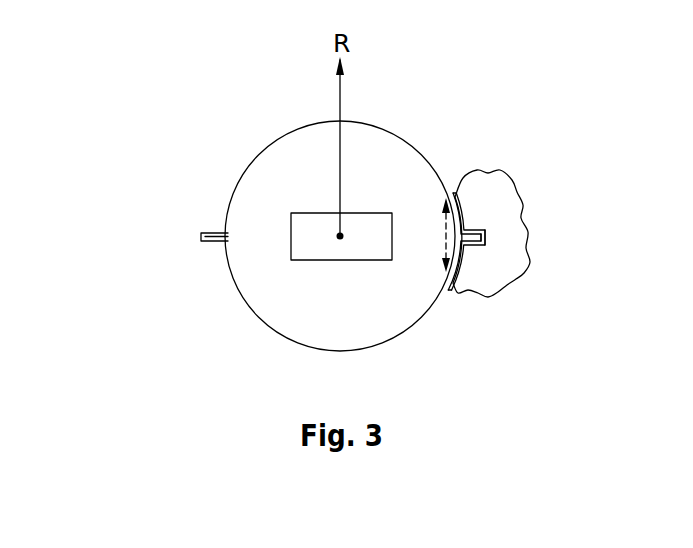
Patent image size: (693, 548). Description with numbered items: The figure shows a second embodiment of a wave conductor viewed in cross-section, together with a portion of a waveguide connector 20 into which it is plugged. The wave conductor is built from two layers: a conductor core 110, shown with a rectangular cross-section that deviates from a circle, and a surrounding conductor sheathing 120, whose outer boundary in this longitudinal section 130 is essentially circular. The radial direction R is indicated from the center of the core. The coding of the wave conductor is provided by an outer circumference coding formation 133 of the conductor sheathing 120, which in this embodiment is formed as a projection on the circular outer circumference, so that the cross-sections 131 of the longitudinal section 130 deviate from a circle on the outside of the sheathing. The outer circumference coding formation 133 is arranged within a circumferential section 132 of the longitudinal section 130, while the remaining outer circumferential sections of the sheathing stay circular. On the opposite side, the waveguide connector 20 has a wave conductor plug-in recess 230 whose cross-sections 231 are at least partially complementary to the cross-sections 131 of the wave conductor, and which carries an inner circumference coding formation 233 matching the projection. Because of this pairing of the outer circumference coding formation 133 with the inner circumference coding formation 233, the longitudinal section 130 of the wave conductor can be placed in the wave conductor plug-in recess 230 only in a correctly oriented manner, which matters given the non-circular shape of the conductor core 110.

The waveguide connector 20 is at (512, 265).
The conductor core 110 is at (312, 225).
The conductor sheathing 120 is at (307, 228).
The longitudinal section 130 is at (395, 135).
The cross-section 131 is at (312, 245).
The circumferential section 132 is at (446, 234).
The outer circumference coding formation 133 is at (202, 240).
The wave conductor plug-in recess 230 is at (556, 215).
The cross-section of the wave conductor plug-in recess 231 is at (465, 212).
The inner circumference coding formation 233 is at (487, 238).